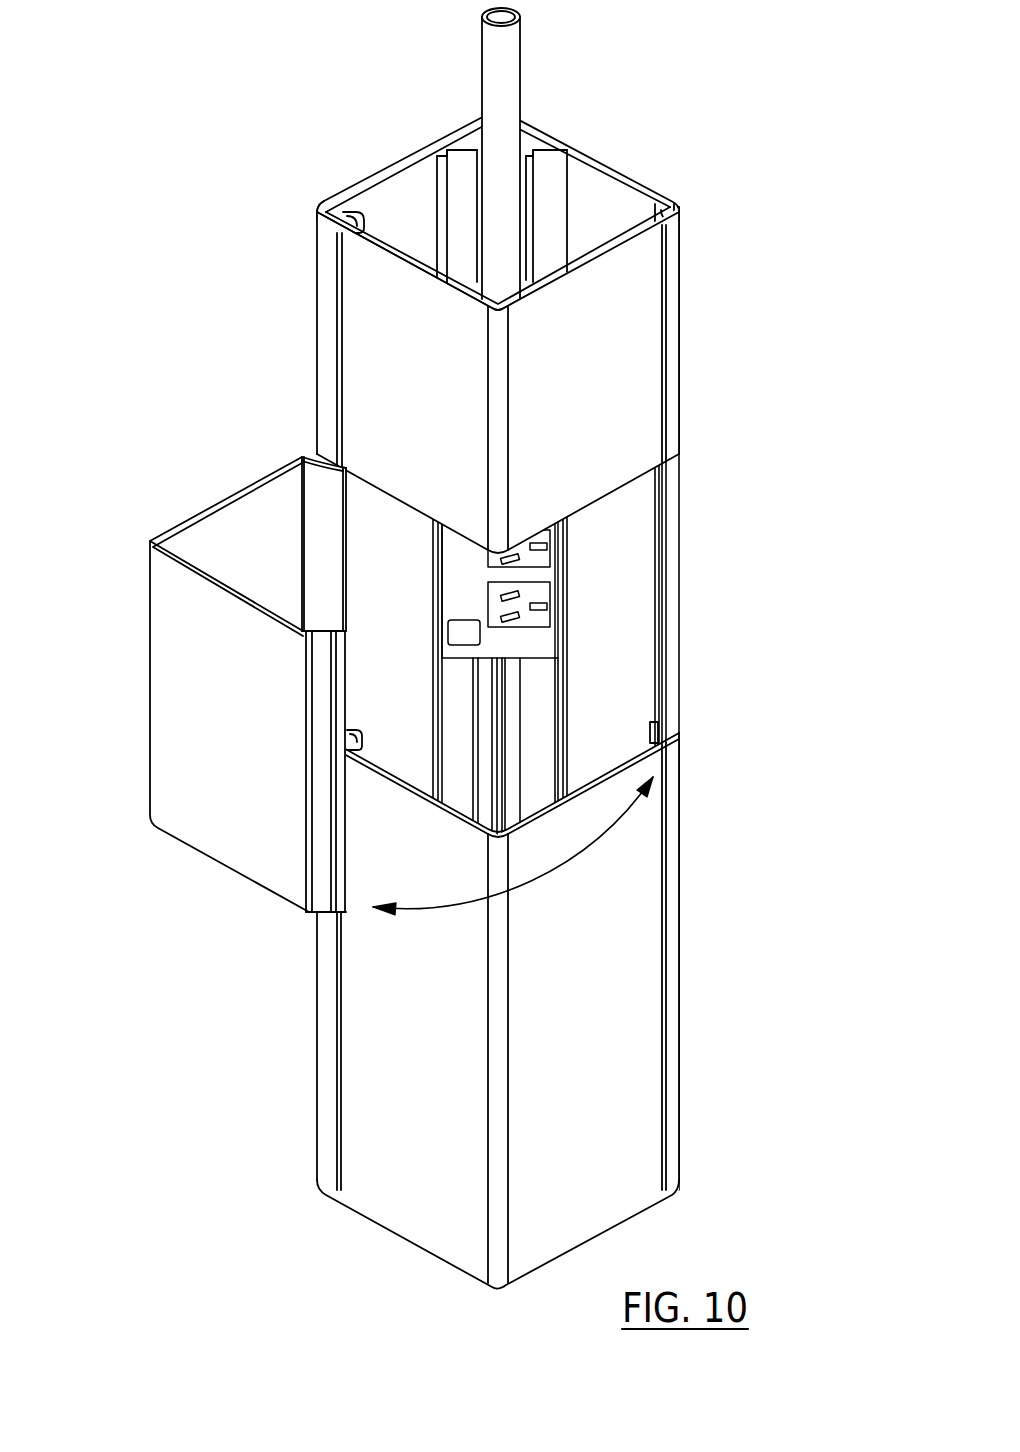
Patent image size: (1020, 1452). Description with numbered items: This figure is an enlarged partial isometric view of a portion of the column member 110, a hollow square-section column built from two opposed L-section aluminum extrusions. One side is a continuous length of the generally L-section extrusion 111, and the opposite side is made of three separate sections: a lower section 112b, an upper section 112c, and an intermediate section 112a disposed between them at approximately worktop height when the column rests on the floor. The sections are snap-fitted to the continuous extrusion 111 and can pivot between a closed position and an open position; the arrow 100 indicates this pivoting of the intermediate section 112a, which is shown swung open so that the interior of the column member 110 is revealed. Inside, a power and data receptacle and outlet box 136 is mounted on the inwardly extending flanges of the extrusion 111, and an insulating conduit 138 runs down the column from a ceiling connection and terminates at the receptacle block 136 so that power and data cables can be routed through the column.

The arrow 100 is at (547, 873).
The column member 110 is at (703, 382).
The L-section extrusion 111 is at (607, 182).
The intermediate section 112a is at (173, 752).
The lower section 112b is at (353, 1048).
The upper section 112c is at (357, 327).
The power and data receptacle and outlet box 136 is at (543, 645).
The conduit 138 is at (513, 73).